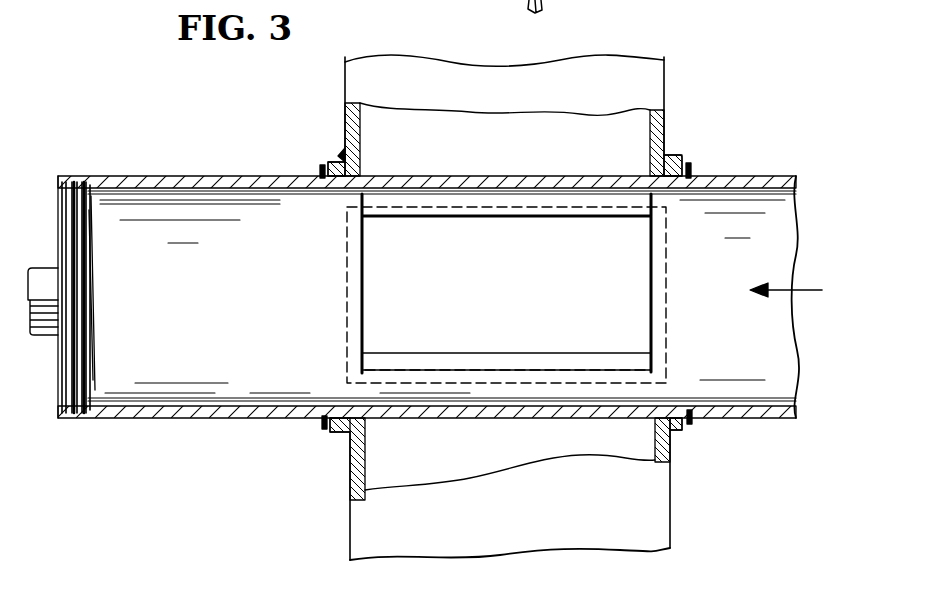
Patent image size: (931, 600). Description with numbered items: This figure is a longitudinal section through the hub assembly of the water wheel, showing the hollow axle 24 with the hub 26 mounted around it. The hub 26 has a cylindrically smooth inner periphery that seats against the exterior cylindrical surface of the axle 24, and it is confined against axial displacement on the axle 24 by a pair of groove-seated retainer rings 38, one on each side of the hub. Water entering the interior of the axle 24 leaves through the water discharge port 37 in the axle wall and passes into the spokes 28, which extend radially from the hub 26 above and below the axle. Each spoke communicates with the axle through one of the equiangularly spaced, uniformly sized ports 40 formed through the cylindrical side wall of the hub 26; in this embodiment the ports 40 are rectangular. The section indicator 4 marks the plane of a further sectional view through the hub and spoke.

The axle 24 is at (770, 176).
The hub 26 is at (333, 160).
The spokes 28 is at (664, 75).
The water discharge port 37 is at (594, 194).
The retainer rings 38 is at (320, 167).
The ports 40 is at (640, 218).
The section line 4- 4 is at (500, 92).